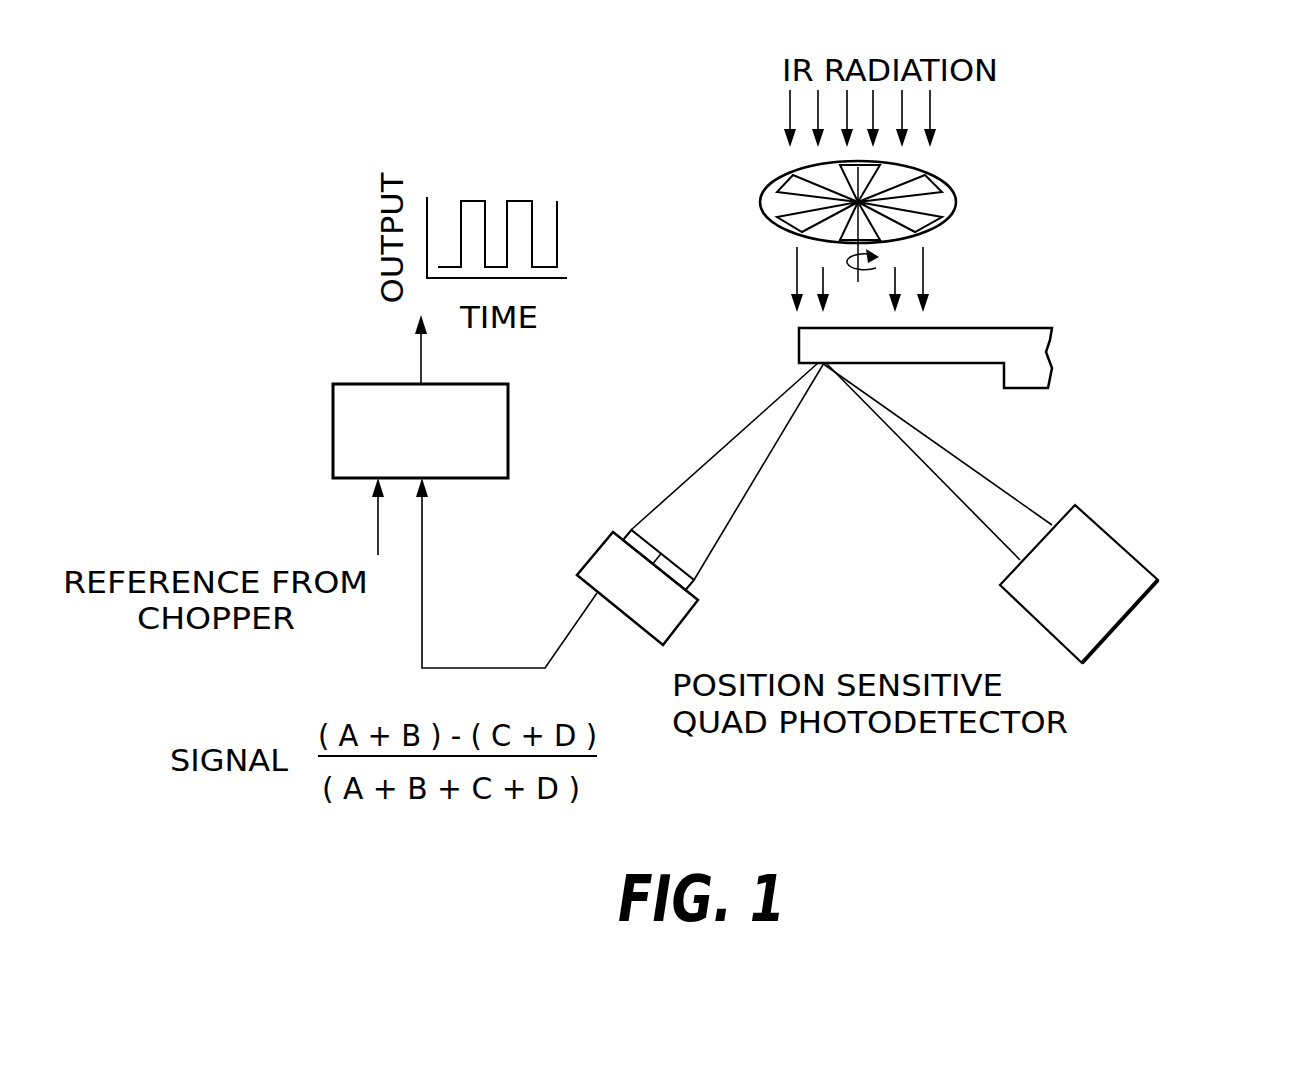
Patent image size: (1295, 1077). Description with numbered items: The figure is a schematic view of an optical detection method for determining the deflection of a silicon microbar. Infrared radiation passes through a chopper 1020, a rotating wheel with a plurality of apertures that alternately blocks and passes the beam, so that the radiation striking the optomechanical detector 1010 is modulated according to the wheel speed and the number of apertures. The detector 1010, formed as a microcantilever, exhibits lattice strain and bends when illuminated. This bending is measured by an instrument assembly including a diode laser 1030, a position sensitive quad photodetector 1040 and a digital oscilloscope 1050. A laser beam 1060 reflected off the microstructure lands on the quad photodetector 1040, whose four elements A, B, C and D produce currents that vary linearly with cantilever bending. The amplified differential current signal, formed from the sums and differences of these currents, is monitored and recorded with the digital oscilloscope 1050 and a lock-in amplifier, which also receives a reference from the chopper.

The optomechanical detector 1010 is at (1053, 333).
The chopper 1020 is at (956, 198).
The diode laser 1030 is at (1137, 558).
The position sensitive quad photodetector 1040 is at (700, 606).
The digital oscilloscope 1050 is at (333, 420).
The laser beam 1060 is at (733, 443).